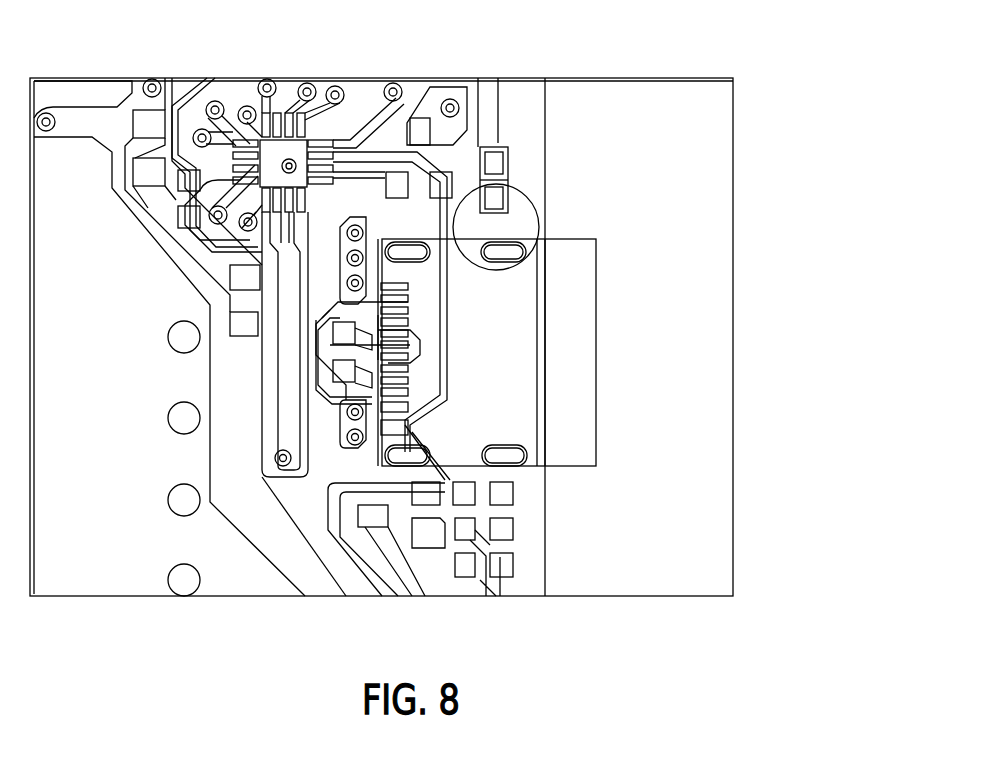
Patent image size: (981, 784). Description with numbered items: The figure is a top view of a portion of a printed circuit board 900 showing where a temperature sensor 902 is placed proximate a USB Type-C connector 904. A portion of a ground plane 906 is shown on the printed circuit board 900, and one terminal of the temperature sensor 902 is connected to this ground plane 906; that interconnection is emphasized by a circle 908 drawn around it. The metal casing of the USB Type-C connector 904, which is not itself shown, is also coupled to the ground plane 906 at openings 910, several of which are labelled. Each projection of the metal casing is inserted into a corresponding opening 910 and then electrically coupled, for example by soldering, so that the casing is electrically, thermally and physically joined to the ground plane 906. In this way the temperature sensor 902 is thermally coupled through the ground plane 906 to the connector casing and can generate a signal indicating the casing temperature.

The printed circuit board 900 is at (98, 78).
The temperature sensor 902 is at (512, 165).
The USB Type-C connector 904 is at (596, 284).
The ground plane 906 is at (500, 412).
The circle 908 is at (542, 230).
The openings 910 is at (403, 252).